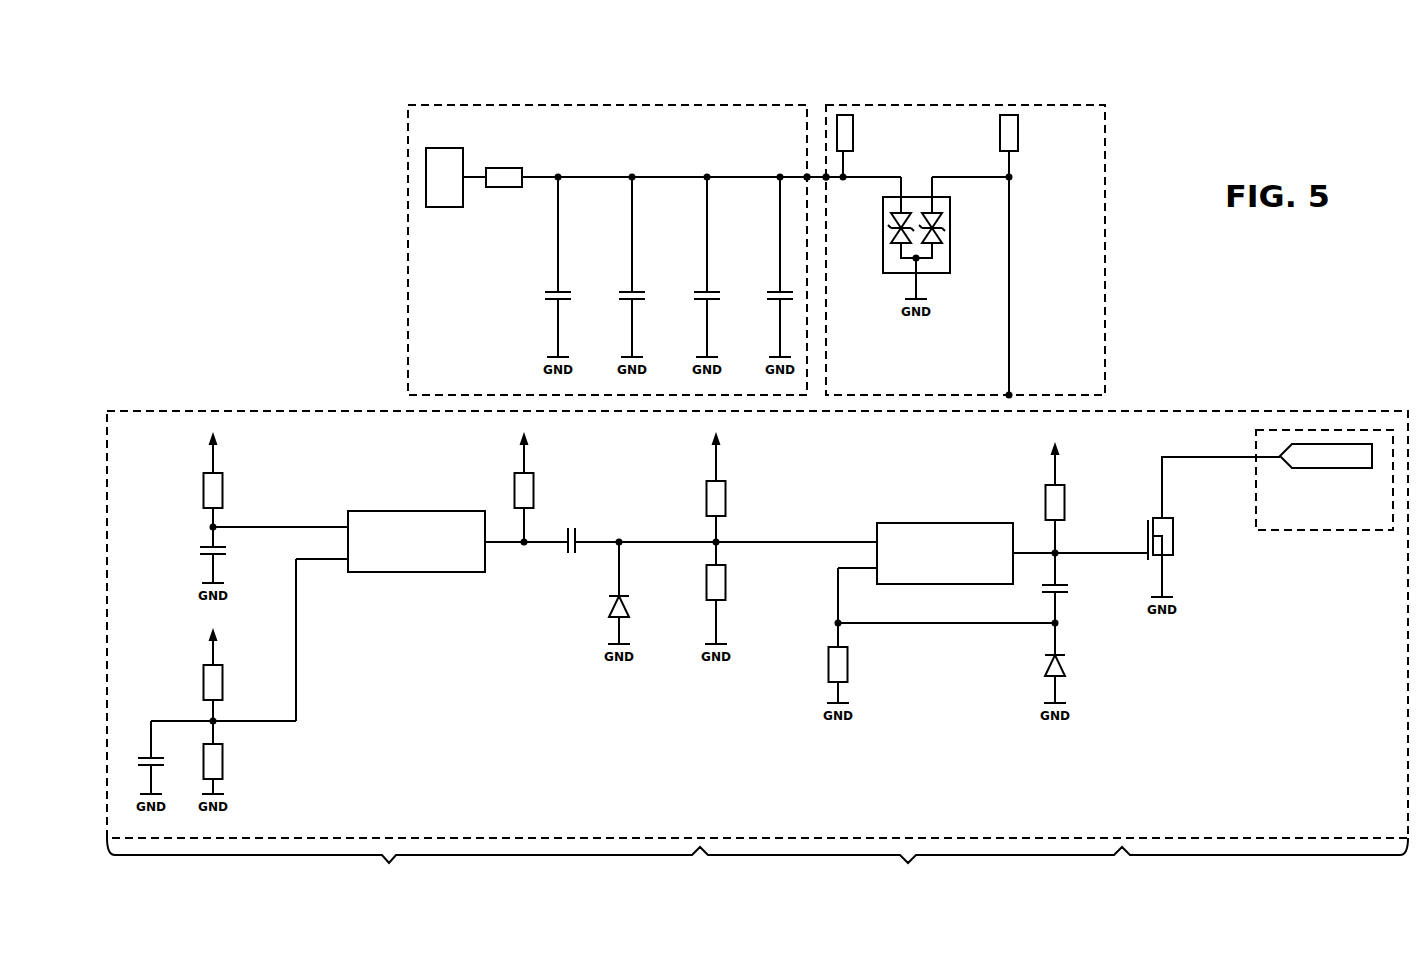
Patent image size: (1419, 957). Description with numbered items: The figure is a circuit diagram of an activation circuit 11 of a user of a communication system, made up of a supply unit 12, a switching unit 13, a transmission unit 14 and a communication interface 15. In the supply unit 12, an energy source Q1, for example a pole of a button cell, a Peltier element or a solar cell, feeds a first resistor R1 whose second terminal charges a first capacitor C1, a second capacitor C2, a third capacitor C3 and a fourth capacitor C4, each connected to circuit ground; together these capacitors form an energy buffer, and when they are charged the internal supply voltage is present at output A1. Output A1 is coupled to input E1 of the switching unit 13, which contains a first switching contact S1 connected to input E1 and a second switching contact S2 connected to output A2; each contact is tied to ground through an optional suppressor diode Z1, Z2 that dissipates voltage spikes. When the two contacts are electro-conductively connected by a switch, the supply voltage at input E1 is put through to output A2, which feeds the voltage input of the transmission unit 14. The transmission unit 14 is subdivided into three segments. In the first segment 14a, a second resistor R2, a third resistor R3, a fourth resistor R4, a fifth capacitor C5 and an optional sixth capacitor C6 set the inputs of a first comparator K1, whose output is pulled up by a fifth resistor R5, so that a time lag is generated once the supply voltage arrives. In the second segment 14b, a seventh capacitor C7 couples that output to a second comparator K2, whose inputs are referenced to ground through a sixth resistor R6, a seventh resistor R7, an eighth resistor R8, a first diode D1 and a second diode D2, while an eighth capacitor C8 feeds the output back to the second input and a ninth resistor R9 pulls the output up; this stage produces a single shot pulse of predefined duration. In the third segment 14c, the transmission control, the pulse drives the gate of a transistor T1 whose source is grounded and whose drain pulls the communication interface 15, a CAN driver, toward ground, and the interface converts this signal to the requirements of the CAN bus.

The activation circuit 11 is at (236, 107).
The supply unit 12 is at (614, 104).
The switching unit 13 is at (959, 104).
The transmission unit 14 is at (318, 410).
The first segment 14a is at (396, 883).
The second segment 14b is at (916, 883).
The third segment 14c is at (1271, 883).
The communication interface 15 is at (1323, 531).
The energy source Q1 is at (442, 207).
The output of supply unit A1 is at (806, 177).
The output of switching unit A2 is at (1011, 393).
The input of switching unit E1 is at (827, 181).
The first resistor R1 is at (682, 160).
The first capacitor C1 is at (545, 277).
The second capacitor C2 is at (619, 277).
The third capacitor C3 is at (694, 277).
The fourth capacitor C4 is at (767, 277).
The first switching contact S1 is at (864, 146).
The second switching contact S2 is at (1027, 146).
The suppressor diode Z1 is at (883, 217).
The suppressor diode Z2 is at (942, 248).
The second resistor R2 is at (276, 476).
The third resistor R3 is at (232, 671).
The fourth resistor R4 is at (223, 767).
The fifth resistor R5 is at (544, 483).
The sixth resistor R6 is at (736, 483).
The seventh resistor R7 is at (733, 603).
The eighth resistor R8 is at (939, 672).
The ninth resistor R9 is at (1074, 494).
The fifth capacitor C5 is at (230, 565).
The sixth capacitor C6 is at (140, 767).
The seventh capacitor C7 is at (717, 559).
The eighth capacitor C8 is at (1073, 590).
The first comparator K1 is at (432, 616).
The second comparator K2 is at (993, 555).
The first diode D1 is at (635, 602).
The second diode D2 is at (1072, 673).
The transistor T1 is at (1213, 537).